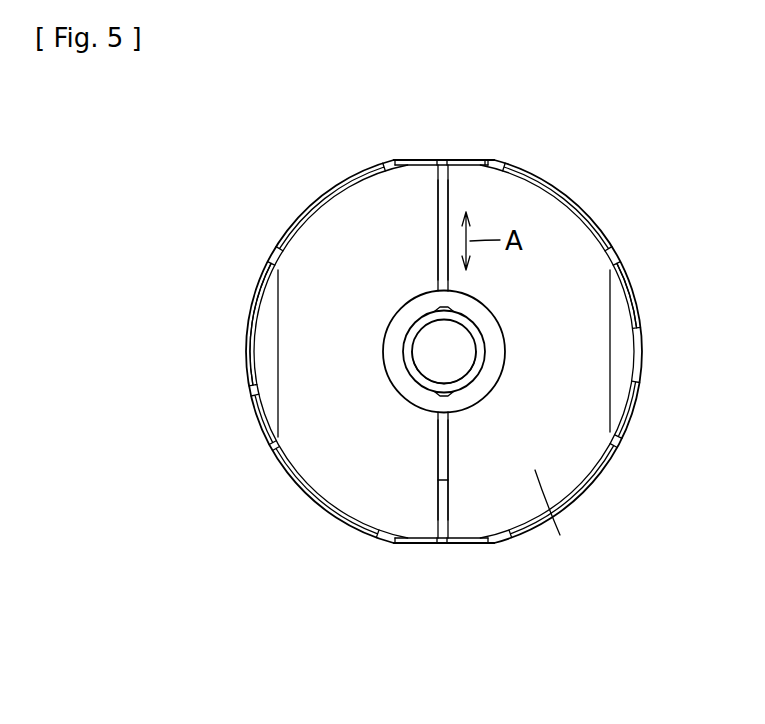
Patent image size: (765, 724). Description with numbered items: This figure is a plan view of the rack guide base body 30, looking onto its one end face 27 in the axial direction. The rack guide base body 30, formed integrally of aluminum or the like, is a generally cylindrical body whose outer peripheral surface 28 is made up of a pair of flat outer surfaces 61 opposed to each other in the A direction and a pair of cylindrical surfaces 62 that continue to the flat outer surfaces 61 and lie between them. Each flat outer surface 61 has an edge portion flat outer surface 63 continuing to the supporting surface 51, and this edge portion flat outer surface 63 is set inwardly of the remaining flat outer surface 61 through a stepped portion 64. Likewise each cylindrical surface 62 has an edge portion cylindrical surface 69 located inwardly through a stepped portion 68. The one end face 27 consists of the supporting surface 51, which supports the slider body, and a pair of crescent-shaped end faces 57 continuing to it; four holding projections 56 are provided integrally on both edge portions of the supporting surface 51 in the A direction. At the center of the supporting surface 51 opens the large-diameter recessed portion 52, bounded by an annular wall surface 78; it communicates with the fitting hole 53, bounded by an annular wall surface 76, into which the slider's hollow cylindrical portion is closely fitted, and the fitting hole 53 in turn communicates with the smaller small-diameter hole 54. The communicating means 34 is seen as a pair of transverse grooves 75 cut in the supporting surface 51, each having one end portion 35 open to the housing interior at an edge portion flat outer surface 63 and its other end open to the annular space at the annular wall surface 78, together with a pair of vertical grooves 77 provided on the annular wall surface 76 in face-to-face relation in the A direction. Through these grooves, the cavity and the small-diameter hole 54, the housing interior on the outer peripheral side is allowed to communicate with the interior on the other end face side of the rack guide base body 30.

The one end face 27 is at (635, 331).
The outer peripheral surface 28 is at (250, 286).
The rack guide base body 30 is at (593, 218).
The communicating means 34 is at (434, 516).
The one end portion 35 is at (438, 158).
The supporting surface 51 is at (564, 517).
The large-diameter recessed portion 52 is at (420, 300).
The fitting hole 53 is at (470, 325).
The small-diameter hole 54 is at (433, 373).
The holding projections 56 is at (320, 206).
The crescent-shaped end faces 57 is at (267, 320).
The flat outer surfaces 61 is at (467, 146).
The cylindrical surfaces 62 is at (236, 354).
The edge portion flat outer surface 63 is at (407, 158).
The stepped portion 64 is at (479, 158).
The stepped portion 68 is at (625, 284).
The edge portion cylindrical surface 69 is at (253, 390).
The transverse grooves 75 is at (437, 203).
The annular wall surface 76 is at (480, 357).
The vertical grooves 77 is at (441, 296).
The annular wall surface 78 is at (405, 338).